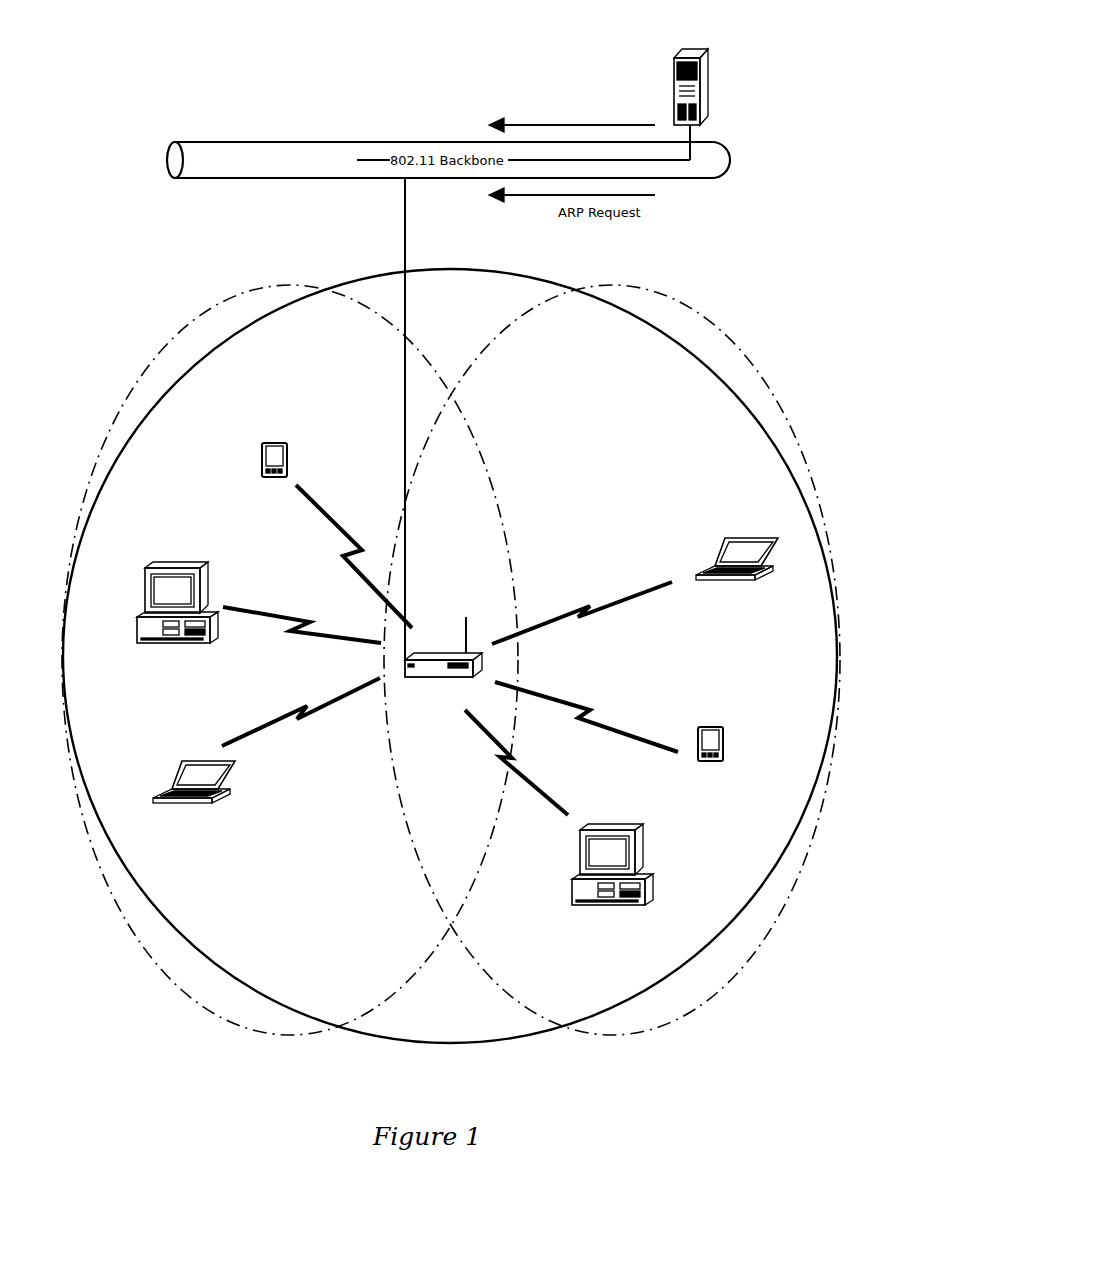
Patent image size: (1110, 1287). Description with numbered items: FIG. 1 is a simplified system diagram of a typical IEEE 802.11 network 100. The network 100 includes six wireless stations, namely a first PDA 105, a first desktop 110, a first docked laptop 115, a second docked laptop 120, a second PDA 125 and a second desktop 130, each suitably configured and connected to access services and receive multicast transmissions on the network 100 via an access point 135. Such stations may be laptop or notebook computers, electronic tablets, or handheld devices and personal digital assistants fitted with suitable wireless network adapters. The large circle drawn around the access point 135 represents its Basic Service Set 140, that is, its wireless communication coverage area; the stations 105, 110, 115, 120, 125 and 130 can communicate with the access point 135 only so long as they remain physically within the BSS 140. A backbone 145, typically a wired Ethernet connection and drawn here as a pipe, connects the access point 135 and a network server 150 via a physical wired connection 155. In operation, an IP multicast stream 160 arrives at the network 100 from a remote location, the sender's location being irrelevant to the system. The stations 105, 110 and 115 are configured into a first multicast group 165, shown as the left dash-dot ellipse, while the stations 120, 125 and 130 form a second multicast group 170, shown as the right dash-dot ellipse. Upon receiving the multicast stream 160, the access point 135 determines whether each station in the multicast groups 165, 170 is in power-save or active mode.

The network 100 is at (864, 28).
The wireless station 105 is at (264, 442).
The wireless station 110 is at (147, 566).
The wireless station 115 is at (183, 760).
The wireless station 120 is at (728, 537).
The wireless station 125 is at (720, 728).
The wireless station 130 is at (593, 829).
The access point 135 is at (428, 653).
The Basic Service Set 140 is at (468, 272).
The backbone 145 is at (730, 148).
The network server 150 is at (690, 48).
The physical wired connection 155 is at (405, 254).
The IP multicast stream 160 is at (554, 124).
The multicast group 165 is at (152, 348).
The multicast group 170 is at (738, 350).